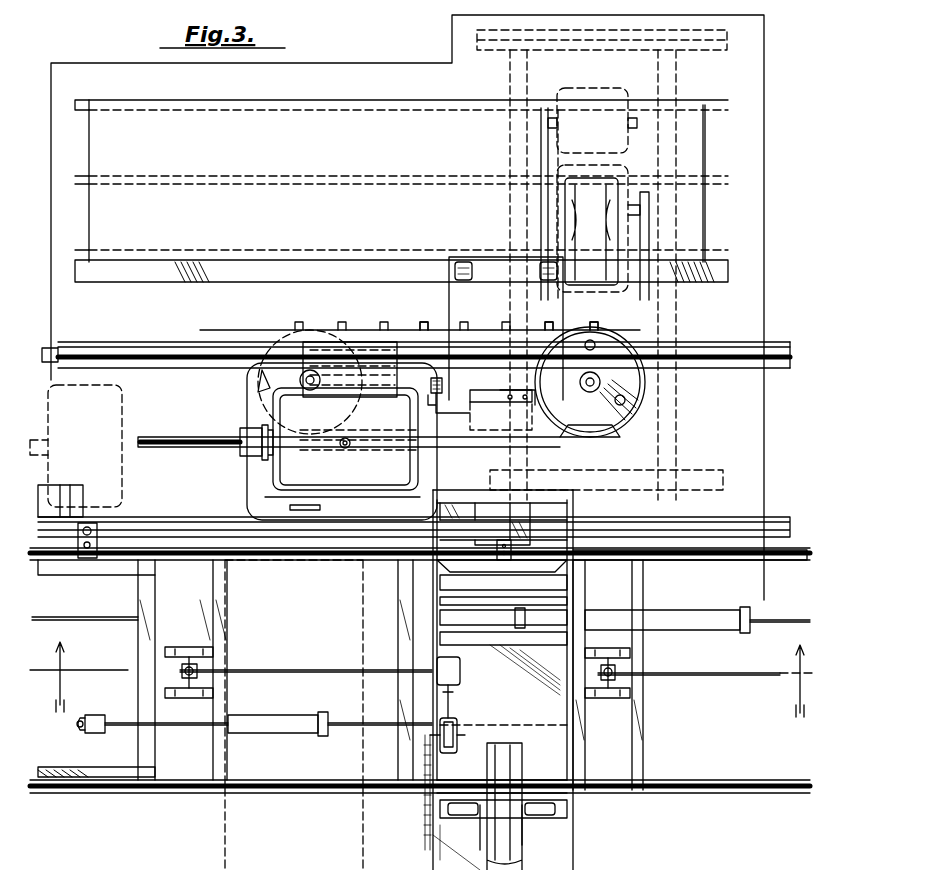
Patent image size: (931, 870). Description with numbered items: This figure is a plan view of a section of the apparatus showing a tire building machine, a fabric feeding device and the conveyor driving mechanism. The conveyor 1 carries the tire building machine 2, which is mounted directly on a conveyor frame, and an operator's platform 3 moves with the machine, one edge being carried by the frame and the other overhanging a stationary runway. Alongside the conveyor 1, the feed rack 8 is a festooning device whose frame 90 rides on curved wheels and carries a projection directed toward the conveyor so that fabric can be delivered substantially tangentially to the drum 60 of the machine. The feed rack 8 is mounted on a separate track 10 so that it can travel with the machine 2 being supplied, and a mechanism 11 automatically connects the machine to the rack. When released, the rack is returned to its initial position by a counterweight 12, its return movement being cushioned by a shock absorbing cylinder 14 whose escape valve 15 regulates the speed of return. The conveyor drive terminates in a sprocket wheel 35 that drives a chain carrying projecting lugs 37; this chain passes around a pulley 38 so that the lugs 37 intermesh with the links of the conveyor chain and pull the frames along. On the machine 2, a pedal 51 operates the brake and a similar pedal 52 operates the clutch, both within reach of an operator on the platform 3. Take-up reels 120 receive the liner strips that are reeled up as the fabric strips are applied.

The conveyor 1 is at (745, 456).
The tire building machine 2 is at (295, 477).
The operator's platform 3 is at (506, 328).
The feed rack 8 is at (498, 680).
The track 10 is at (752, 556).
The mechanism 11 is at (452, 718).
The counterweight 12 is at (285, 660).
The shock absorbing cylinder 14 is at (275, 703).
The escape valve 15 is at (86, 718).
The sprocket wheel 35 is at (600, 350).
The lug 37 is at (392, 326).
The pulley 38 is at (300, 400).
The pedal 51 is at (442, 385).
The pedal 52 is at (509, 385).
The drum 60 is at (501, 410).
The frame 90 is at (575, 592).
The take-up reel 120 is at (475, 815).